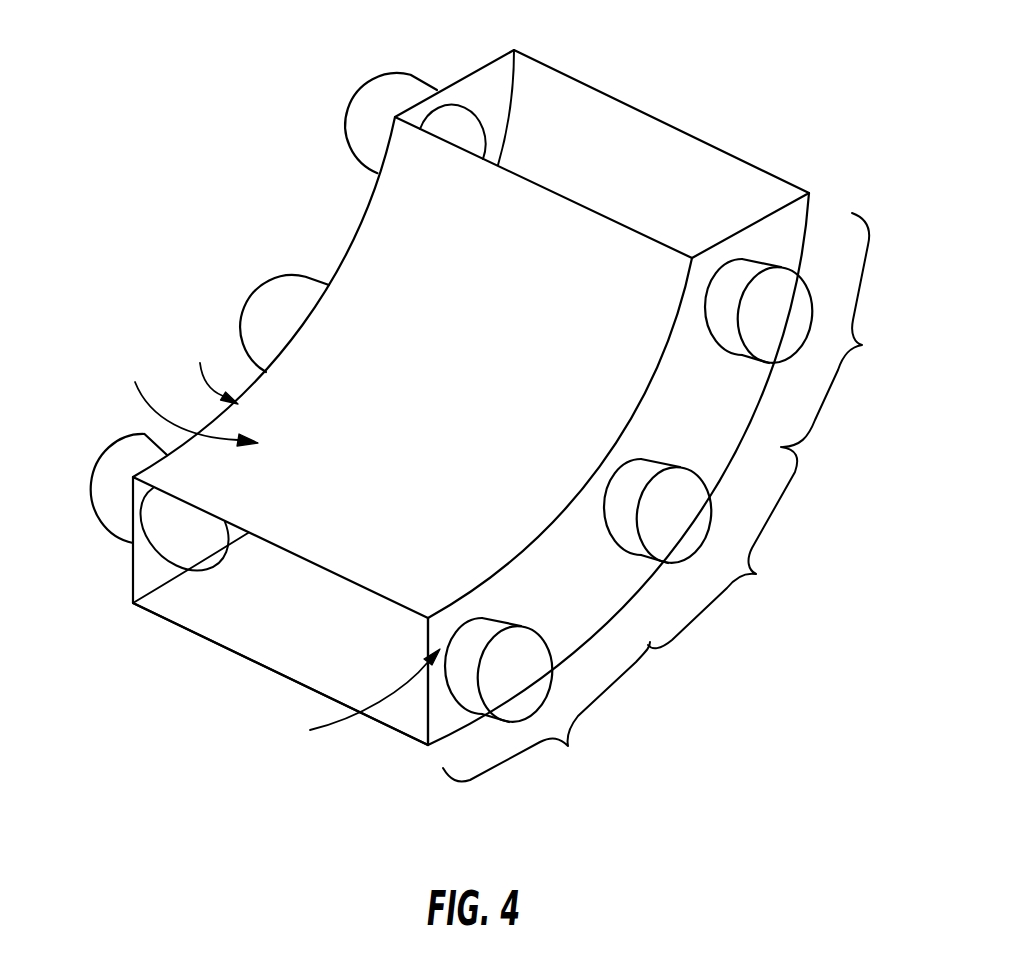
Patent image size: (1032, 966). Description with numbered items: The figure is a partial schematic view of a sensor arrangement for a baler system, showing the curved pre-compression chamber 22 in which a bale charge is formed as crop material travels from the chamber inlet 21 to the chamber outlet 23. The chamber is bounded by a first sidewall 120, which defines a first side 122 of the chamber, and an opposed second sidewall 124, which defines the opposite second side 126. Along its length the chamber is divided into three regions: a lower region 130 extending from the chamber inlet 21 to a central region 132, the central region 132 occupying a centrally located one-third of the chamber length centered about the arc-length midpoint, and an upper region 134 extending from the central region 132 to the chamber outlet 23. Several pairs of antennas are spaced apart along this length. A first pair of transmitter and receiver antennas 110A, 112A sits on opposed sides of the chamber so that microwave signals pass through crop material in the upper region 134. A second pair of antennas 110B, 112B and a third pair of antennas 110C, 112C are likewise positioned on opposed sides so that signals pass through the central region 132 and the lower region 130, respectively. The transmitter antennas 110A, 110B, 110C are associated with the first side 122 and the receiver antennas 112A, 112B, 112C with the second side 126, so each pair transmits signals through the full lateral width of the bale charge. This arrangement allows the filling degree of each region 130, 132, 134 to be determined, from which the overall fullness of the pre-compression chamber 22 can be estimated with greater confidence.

The chamber inlet 21 is at (197, 637).
The pre-compression chamber 22 is at (191, 396).
The chamber outlet 23 is at (657, 117).
The transmitter antenna of first pair 110A is at (378, 76).
The transmitter antenna of second pair 110B is at (263, 284).
The transmitter antenna of third pair 110C is at (110, 445).
The receiver antenna of first pair 112A is at (777, 263).
The receiver antenna of second pair 112B is at (668, 464).
The receiver antenna of third pair 112C is at (510, 623).
The first sidewall 120 is at (140, 568).
The first side 122 is at (211, 364).
The second sidewall 124 is at (440, 720).
The second side 126 is at (356, 699).
The lower region 130 is at (546, 713).
The central region 132 is at (722, 547).
The upper region 134 is at (844, 330).